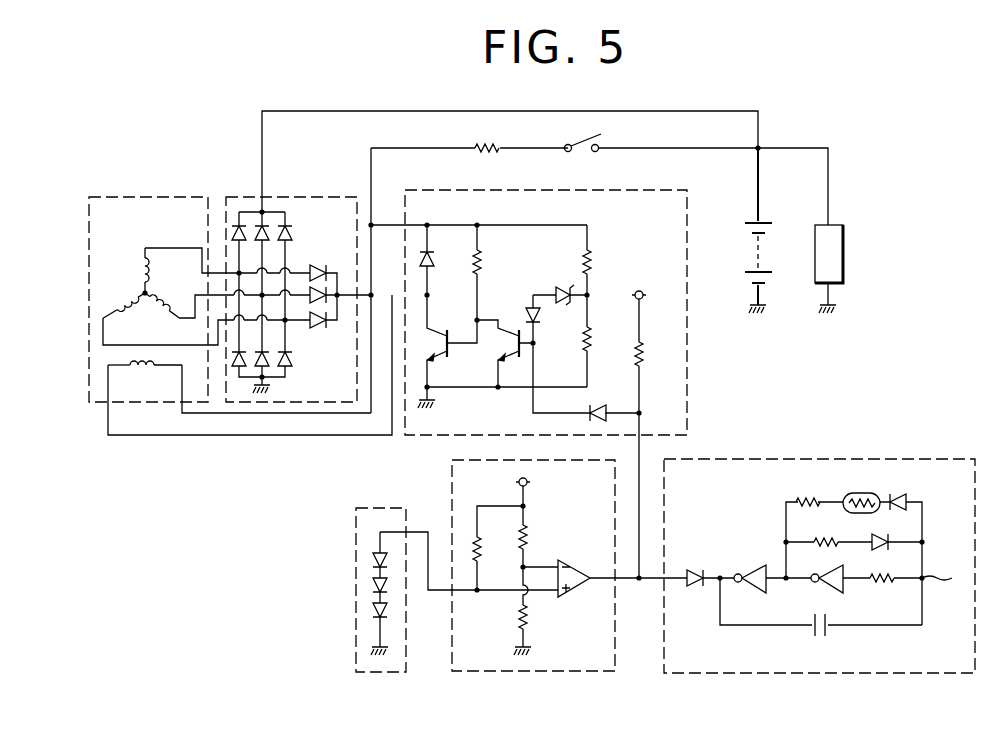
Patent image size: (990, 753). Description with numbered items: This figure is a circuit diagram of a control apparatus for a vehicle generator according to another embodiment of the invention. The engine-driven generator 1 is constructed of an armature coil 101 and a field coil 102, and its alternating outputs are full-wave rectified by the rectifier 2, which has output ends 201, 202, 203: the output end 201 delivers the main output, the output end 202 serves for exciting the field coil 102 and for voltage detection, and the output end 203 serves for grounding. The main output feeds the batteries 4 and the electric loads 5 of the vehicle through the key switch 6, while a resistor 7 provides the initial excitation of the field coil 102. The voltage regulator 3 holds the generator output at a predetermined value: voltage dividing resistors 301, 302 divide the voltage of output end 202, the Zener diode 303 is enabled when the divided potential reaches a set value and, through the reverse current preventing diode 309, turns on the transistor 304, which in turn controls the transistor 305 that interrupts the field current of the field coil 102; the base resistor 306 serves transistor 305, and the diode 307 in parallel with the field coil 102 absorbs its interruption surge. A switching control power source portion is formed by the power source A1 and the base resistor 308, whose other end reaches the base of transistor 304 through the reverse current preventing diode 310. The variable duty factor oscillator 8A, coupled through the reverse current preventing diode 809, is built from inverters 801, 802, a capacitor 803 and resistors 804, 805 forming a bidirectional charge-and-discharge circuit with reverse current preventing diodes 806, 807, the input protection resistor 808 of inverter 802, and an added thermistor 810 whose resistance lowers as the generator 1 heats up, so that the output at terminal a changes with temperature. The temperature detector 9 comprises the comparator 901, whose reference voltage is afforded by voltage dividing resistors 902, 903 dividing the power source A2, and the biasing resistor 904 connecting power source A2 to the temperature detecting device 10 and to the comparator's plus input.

The generator 1 is at (148, 197).
The armature coil 101 is at (144, 259).
The field coil 102 is at (145, 370).
The rectifier 2 is at (226, 197).
The output end 201 is at (262, 212).
The output end 202 is at (337, 284).
The output end 203 is at (265, 380).
The voltage regulator 3 is at (690, 368).
The voltage dividing resistor 301 is at (590, 243).
The voltage dividing resistor 302 is at (585, 348).
The Zener diode 303 is at (558, 287).
The transistor 304 is at (518, 359).
The transistor 305 is at (445, 353).
The base resistor 306 is at (482, 255).
The diode 307 is at (435, 252).
The base resistor 308 is at (645, 343).
The reverse current preventing diode 309 is at (530, 311).
The reverse current preventing diode 310 is at (598, 406).
The power source A1 is at (639, 291).
The batteries 4 is at (752, 255).
The electric loads 5 is at (845, 238).
The key switch 6 is at (572, 136).
The resistor 7 is at (474, 147).
The variable duty factor oscillator 8A is at (846, 459).
The inverter 801 is at (750, 563).
The inverter 802 is at (825, 590).
The capacitor 803 is at (827, 633).
The resistor 804 is at (798, 502).
The resistor 805 is at (812, 540).
The reverse current preventing diode 806 is at (902, 496).
The reverse current preventing diode 807 is at (883, 540).
The input protection resistor 808 is at (882, 585).
The reverse current preventing diode 809 is at (695, 585).
The thermistor 810 is at (860, 491).
The output terminal a is at (945, 580).
The temperature detector 9 is at (536, 673).
The comparator 901 is at (580, 550).
The voltage dividing resistor 902 is at (525, 528).
The voltage dividing resistor 903 is at (529, 620).
The biasing resistor 904 is at (477, 537).
The power source A2 is at (530, 483).
The temperature detecting device 10 is at (356, 567).